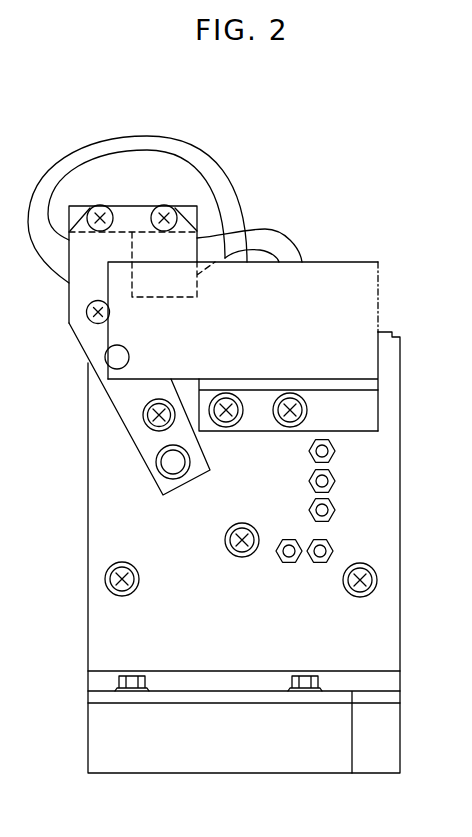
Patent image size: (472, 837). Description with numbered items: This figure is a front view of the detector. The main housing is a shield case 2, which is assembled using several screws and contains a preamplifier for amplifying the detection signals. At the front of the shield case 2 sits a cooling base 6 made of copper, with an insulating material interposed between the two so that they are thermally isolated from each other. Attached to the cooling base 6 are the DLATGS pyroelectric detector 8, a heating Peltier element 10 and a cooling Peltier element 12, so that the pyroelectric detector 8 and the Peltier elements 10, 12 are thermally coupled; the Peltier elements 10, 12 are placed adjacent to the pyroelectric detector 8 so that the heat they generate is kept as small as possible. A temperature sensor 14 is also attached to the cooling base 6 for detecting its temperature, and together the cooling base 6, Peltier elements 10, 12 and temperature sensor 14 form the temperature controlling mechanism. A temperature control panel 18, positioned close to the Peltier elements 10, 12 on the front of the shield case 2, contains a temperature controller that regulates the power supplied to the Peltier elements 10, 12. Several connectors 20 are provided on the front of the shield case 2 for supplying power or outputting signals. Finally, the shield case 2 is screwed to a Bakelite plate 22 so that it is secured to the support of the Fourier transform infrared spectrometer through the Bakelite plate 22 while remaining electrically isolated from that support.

The shield case 2 is at (88, 628).
The cooling base 6 is at (82, 338).
The pyroelectric detector 8 is at (156, 467).
The heating Peltier element 10 is at (84, 282).
The cooling Peltier element 12 is at (184, 247).
The temperature sensor 14 is at (110, 357).
The temperature control panel 18 is at (348, 277).
The connectors 20 is at (340, 473).
The Bakelite plate 22 is at (305, 748).